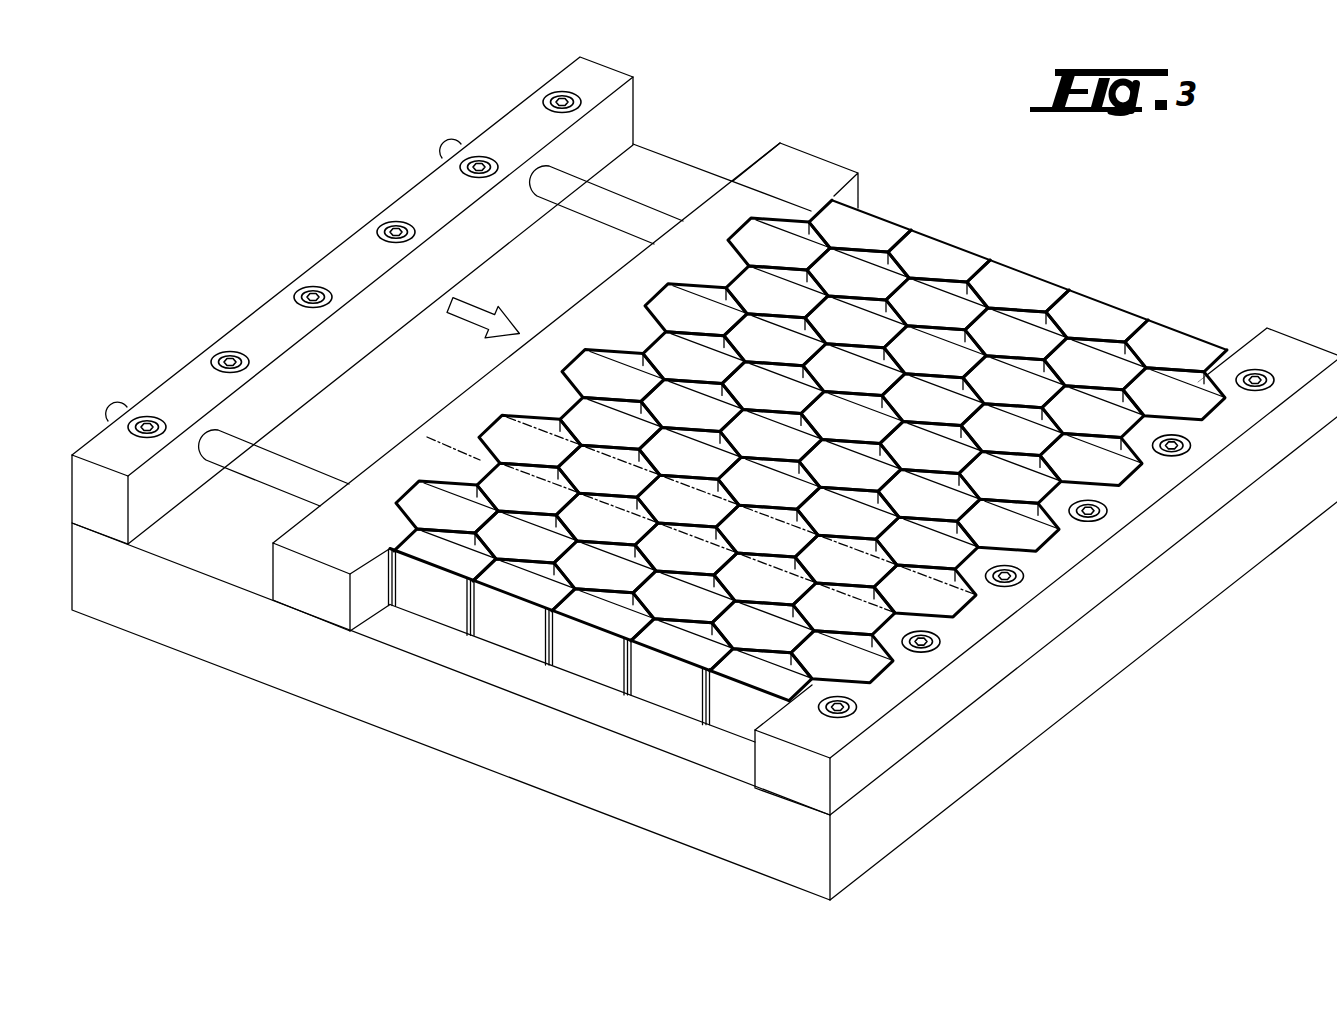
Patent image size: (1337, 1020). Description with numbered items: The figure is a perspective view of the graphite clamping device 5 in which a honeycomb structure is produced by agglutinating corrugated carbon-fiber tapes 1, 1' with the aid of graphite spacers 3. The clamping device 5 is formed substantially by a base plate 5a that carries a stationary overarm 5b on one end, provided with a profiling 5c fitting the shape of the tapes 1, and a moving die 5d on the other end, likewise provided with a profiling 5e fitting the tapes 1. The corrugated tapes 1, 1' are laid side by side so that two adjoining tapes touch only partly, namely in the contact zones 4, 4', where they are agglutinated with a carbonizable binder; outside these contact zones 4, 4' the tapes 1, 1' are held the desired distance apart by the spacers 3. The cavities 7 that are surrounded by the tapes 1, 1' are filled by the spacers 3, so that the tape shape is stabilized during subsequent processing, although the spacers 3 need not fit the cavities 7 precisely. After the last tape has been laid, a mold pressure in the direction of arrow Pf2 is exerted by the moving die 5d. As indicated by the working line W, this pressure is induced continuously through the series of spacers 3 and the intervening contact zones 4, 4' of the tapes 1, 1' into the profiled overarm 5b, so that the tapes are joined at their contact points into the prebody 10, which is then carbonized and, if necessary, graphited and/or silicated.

The tape 1 is at (957, 248).
The tape 1' is at (939, 215).
The graphite spacer 3 is at (1083, 313).
The contact zone 4 is at (858, 226).
The contact zone 4' is at (1008, 250).
The clamping device 5 is at (340, 715).
The base plate 5a is at (482, 762).
The stationary overarm 5b is at (1295, 355).
The profiling 5c is at (1143, 440).
The moving die 5d is at (798, 176).
The profiling 5e is at (703, 240).
The cavity 7 is at (724, 330).
The prebody 10 is at (1150, 322).
The working line W is at (476, 428).
The arrow Pf2 is at (492, 304).